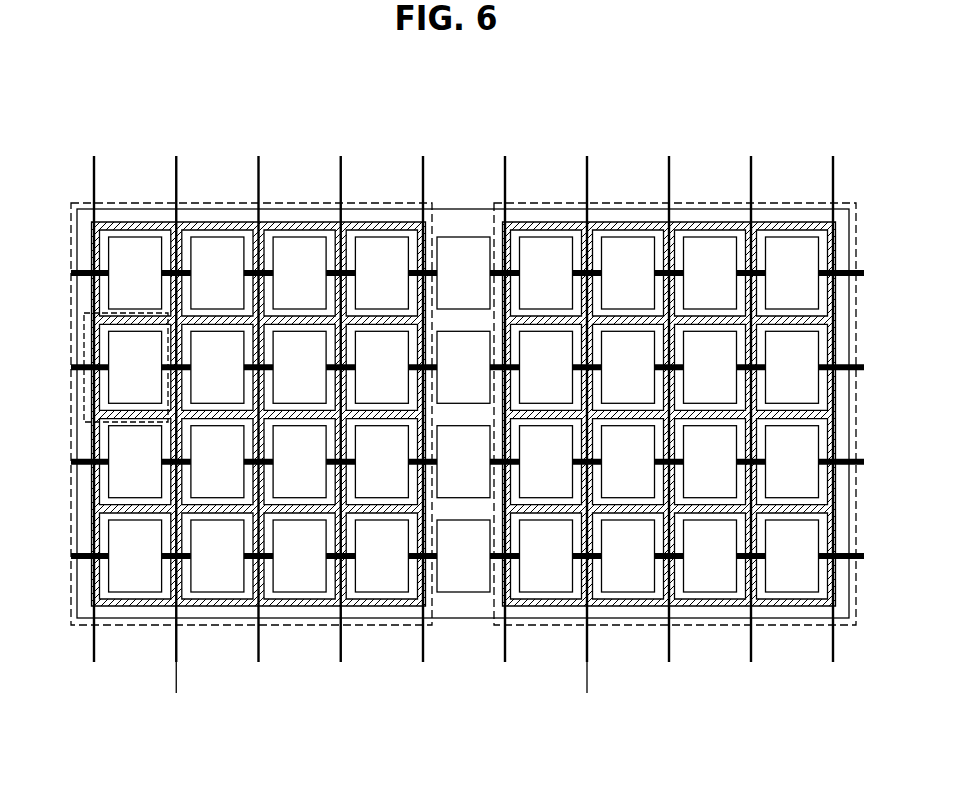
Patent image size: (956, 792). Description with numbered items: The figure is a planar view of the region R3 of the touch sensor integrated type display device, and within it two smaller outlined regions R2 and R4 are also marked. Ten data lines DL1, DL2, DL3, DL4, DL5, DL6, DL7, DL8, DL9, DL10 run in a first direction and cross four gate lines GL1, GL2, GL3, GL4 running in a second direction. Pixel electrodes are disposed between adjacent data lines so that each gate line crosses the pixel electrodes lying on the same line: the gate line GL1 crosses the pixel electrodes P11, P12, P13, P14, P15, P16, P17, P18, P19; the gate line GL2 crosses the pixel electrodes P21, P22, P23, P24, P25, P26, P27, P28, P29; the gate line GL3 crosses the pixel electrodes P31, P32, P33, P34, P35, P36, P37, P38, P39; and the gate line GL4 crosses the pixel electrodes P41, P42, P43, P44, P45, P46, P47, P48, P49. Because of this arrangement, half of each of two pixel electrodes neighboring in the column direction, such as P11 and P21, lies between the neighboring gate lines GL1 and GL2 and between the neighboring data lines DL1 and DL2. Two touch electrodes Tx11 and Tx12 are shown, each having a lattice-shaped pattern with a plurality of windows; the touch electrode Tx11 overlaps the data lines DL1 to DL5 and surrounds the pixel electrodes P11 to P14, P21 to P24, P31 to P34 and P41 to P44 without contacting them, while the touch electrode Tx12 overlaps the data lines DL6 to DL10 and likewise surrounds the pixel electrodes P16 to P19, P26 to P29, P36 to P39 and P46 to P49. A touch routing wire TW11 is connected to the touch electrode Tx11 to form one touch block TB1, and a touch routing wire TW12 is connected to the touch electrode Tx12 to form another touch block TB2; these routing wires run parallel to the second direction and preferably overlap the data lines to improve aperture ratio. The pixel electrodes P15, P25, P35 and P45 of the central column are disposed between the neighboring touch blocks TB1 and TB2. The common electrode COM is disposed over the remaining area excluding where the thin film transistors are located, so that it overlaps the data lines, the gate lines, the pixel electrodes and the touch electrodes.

The second region (solid outline) R2 is at (56, 184).
The region R3 is at (76, 100).
The fourth region (pixel unit) R4 is at (84, 328).
The touch block TB1 is at (377, 202).
The touch block TB2 is at (537, 202).
The touch electrode Tx11 is at (220, 222).
The touch electrode Tx12 is at (621, 222).
The common electrode COM is at (463, 209).
The touch routing wire TW11 is at (177, 690).
The touch routing wire TW12 is at (589, 690).
The data line DL1 is at (91, 398).
The data line DL2 is at (174, 398).
The data line DL3 is at (256, 398).
The data line DL4 is at (338, 398).
The data line DL5 is at (420, 398).
The data line DL6 is at (502, 398).
The data line DL7 is at (584, 398).
The data line DL8 is at (666, 398).
The data line DL9 is at (748, 398).
The data line DL10 is at (831, 398).
The gate line GL1 is at (449, 274).
The gate line GL2 is at (449, 368).
The gate line GL3 is at (449, 463).
The gate line GL4 is at (449, 557).
The pixel electrode P11 is at (135, 273).
The pixel electrode P12 is at (217, 273).
The pixel electrode P13 is at (299, 273).
The pixel electrode P14 is at (381, 273).
The pixel electrode P15 is at (463, 273).
The pixel electrode P16 is at (546, 273).
The pixel electrode P17 is at (628, 273).
The pixel electrode P18 is at (710, 273).
The pixel electrode P19 is at (792, 273).
The pixel electrode P21 is at (135, 367).
The pixel electrode P22 is at (217, 367).
The pixel electrode P23 is at (299, 367).
The pixel electrode P24 is at (381, 367).
The pixel electrode P25 is at (463, 367).
The pixel electrode P26 is at (546, 367).
The pixel electrode P27 is at (628, 367).
The pixel electrode P28 is at (710, 367).
The pixel electrode P29 is at (792, 367).
The pixel electrode P31 is at (135, 462).
The pixel electrode P32 is at (217, 462).
The pixel electrode P33 is at (299, 462).
The pixel electrode P34 is at (381, 462).
The pixel electrode P35 is at (463, 462).
The pixel electrode P36 is at (546, 462).
The pixel electrode P37 is at (628, 462).
The pixel electrode P38 is at (710, 462).
The pixel electrode P39 is at (792, 462).
The pixel electrode P41 is at (135, 556).
The pixel electrode P42 is at (217, 556).
The pixel electrode P43 is at (299, 556).
The pixel electrode P44 is at (381, 556).
The pixel electrode P45 is at (463, 556).
The pixel electrode P46 is at (546, 556).
The pixel electrode P47 is at (628, 556).
The pixel electrode P48 is at (710, 556).
The pixel electrode P49 is at (792, 556).